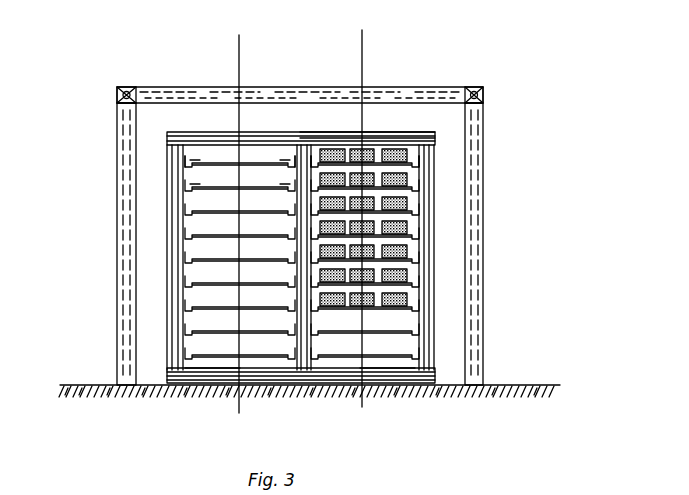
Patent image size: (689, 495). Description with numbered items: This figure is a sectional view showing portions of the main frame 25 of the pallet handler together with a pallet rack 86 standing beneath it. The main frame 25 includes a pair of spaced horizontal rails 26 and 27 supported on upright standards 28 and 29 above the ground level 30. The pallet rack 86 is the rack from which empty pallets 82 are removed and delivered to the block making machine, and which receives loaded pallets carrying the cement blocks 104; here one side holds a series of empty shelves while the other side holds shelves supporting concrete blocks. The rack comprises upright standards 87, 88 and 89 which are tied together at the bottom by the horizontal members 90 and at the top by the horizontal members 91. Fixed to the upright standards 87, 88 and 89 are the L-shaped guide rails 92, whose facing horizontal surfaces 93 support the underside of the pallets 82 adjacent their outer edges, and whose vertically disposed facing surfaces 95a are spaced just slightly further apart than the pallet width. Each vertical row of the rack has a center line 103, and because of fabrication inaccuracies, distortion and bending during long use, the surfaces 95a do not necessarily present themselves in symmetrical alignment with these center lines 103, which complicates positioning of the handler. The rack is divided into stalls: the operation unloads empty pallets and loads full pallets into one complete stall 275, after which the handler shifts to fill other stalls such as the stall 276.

The main frame 25 is at (398, 84).
The horizontal rail 26 is at (120, 88).
The horizontal rail 27 is at (483, 95).
The upright standard 28 is at (126, 205).
The upright standard 29 is at (472, 258).
The ground level 30 is at (507, 385).
The pallet 82 is at (233, 230).
The pallet rack 86 is at (255, 131).
The upright standard 87 is at (176, 250).
The upright standard 88 is at (318, 146).
The upright standard 89 is at (428, 193).
The horizontal member 90 is at (275, 378).
The horizontal member 91 is at (228, 132).
The L-shaped guide rail 92 is at (307, 197).
The horizontal surface 93 is at (290, 160).
The vertically disposed facing surface 95a is at (190, 158).
The center line 103 is at (239, 60).
The cement block 104 is at (384, 148).
The stall 275 is at (214, 360).
The stall 276 is at (377, 360).